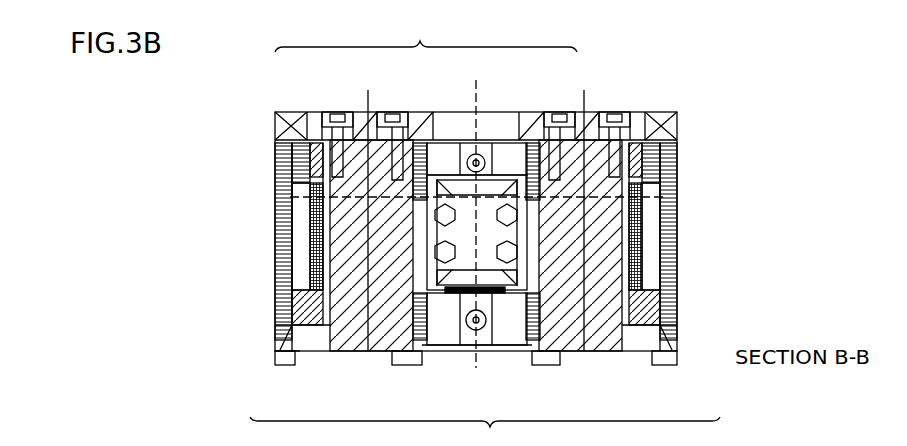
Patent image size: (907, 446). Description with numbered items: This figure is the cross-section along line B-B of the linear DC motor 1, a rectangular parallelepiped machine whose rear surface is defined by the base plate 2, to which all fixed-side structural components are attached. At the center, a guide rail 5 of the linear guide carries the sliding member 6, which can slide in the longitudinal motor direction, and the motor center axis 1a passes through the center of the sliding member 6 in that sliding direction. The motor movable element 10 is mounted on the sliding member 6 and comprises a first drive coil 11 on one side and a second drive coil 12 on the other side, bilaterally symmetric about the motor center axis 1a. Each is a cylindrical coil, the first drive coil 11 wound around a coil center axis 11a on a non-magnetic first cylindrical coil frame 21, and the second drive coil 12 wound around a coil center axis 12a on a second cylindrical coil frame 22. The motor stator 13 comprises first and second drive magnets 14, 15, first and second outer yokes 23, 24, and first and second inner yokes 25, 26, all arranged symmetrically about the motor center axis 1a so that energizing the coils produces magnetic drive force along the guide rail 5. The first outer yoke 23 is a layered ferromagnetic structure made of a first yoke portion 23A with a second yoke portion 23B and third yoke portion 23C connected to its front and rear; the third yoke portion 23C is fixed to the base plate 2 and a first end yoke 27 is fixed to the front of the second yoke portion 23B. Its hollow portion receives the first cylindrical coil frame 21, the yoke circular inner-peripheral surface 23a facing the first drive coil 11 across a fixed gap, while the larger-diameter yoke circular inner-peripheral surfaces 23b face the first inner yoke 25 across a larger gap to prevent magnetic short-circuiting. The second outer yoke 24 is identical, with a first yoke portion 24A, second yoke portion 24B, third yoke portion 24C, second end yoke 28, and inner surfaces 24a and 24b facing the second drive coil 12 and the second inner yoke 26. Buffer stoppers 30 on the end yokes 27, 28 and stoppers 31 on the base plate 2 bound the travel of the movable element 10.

The linear DC motor 1 is at (729, 97).
The motor center axis 1a is at (477, 98).
The base plate 2 is at (668, 131).
The guide rail 5 is at (489, 303).
The sliding member 6 is at (497, 235).
The motor movable element 10 is at (426, 31).
The first drive coil 11 is at (313, 195).
The coil center axis 11a is at (371, 102).
The second drive coil 12 is at (535, 147).
The coil center axis 12a is at (586, 102).
The motor stator 13 is at (485, 431).
The first drive magnet 14 is at (345, 312).
The second drive magnet 15 is at (593, 340).
The first cylindrical coil frame 21 is at (340, 150).
The second cylindrical coil frame 22 is at (586, 147).
The first outer yoke 23 is at (173, 143).
The first yoke portion 23A is at (228, 190).
The second yoke portion 23B is at (228, 291).
The third yoke portion 23C is at (228, 142).
The yoke circular inner-peripheral surface 23a is at (312, 215).
The yoke circular inner-peripheral surfaces 23b is at (295, 142).
The second outer yoke 24 is at (784, 147).
The first yoke portion 24A is at (741, 190).
The second yoke portion 24B is at (741, 291).
The third yoke portion 24C is at (741, 142).
The yoke circular inner-peripheral surface 24a is at (637, 212).
The yoke circular inner-peripheral surfaces 24b is at (650, 145).
The first inner yoke 25 is at (381, 343).
The second inner yoke 26 is at (580, 348).
The first end yoke 27 is at (286, 352).
The second end yoke 28 is at (667, 347).
The stopper 30 is at (313, 350).
The stopper 31 is at (310, 165).